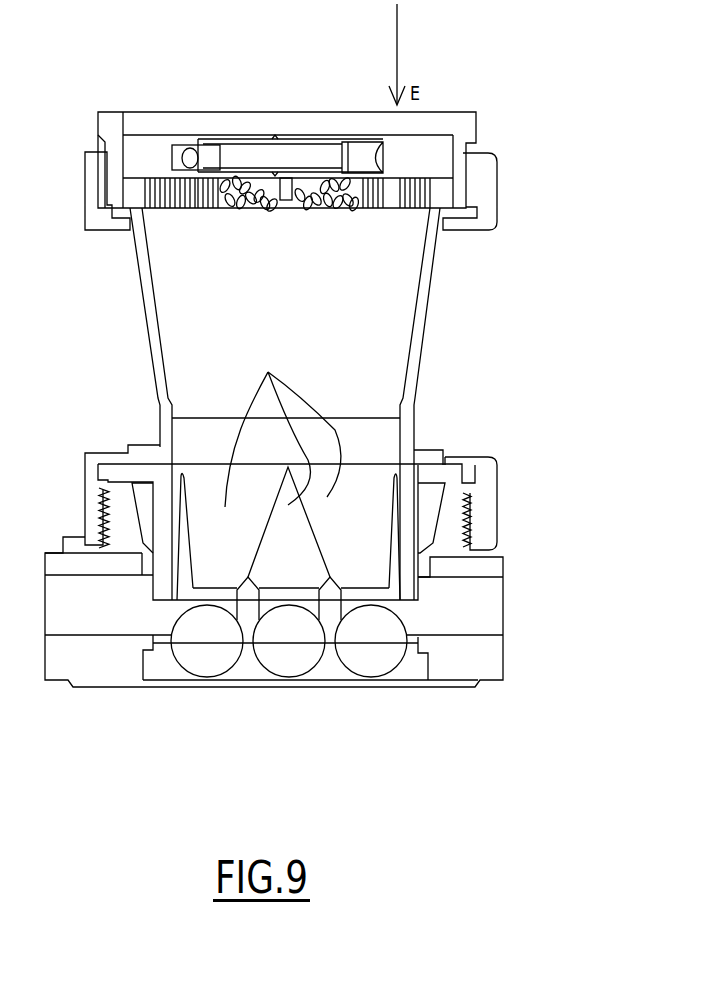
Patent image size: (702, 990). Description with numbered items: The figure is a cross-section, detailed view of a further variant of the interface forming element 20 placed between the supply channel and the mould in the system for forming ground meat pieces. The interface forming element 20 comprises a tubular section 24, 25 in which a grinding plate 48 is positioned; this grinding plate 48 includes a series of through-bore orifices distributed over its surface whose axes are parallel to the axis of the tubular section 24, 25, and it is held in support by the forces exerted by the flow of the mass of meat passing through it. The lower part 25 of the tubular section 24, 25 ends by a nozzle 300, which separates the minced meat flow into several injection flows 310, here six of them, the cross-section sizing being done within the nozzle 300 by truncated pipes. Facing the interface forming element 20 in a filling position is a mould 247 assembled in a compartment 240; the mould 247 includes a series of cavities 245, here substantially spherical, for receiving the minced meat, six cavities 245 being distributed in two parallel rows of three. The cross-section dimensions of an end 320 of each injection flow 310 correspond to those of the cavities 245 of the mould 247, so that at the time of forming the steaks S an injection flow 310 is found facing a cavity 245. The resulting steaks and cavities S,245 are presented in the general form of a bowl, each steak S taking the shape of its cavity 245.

The interface forming element 20 is at (467, 127).
The grinding plate 48 is at (440, 198).
The tubular section 24 is at (423, 307).
The lower part of the tubular section 25 is at (415, 440).
The injection flow 310 is at (283, 423).
The nozzle 300 is at (413, 518).
The end of injection flow 320 is at (400, 612).
The mould 247 is at (413, 665).
The compartment 240 is at (490, 668).
The steaks and cavities S,245 is at (289, 701).
The cavity 245 is at (289, 701).
The steak S is at (360, 652).